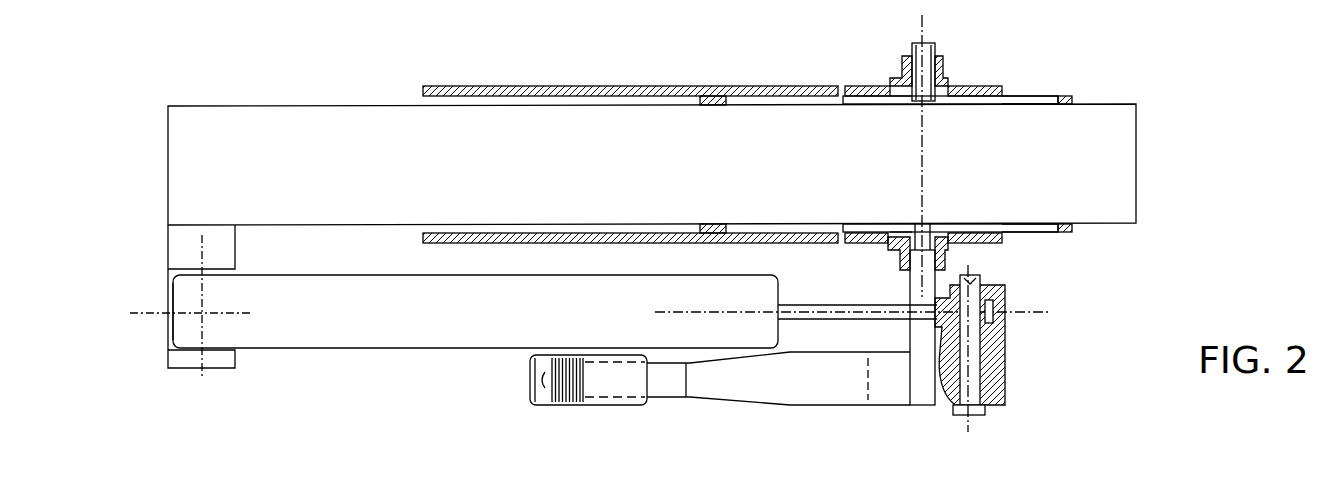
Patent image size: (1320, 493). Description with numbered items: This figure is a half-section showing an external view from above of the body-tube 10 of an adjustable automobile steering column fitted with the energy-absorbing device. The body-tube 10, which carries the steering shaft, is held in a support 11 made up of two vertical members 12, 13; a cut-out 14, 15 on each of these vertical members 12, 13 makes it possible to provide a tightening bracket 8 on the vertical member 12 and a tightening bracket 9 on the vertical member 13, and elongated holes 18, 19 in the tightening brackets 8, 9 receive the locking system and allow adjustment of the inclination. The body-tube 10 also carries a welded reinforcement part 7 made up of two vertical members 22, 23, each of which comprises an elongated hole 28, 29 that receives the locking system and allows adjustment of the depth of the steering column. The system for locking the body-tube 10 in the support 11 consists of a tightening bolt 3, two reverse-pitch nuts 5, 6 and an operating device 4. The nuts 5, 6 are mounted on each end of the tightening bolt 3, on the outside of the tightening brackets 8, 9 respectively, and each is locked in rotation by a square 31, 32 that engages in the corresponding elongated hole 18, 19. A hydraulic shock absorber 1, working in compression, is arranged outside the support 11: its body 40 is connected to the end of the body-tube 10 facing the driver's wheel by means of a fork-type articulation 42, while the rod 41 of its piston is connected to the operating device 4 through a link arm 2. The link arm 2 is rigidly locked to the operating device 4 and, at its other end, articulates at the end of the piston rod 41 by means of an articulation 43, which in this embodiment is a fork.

The hydraulic shock absorber 1 is at (410, 350).
The link arm 2 is at (1005, 312).
The tightening bolt 3 is at (912, 49).
The operating device 4 is at (732, 383).
The reverse-pitch nut 5 is at (945, 62).
The reverse-pitch nut 6 is at (942, 258).
The reinforcement part 7 is at (706, 95).
The tightening bracket 8 is at (869, 88).
The tightening bracket 9 is at (870, 245).
The body-tube 10 is at (579, 172).
The support 11 is at (630, 58).
The vertical member 12 is at (465, 92).
The vertical member 13 is at (467, 236).
The cut-out 14 is at (841, 95).
The cut-out 15 is at (840, 240).
The elongated hole 18 is at (960, 82).
The elongated hole 19 is at (938, 228).
The vertical member 22 is at (1070, 96).
The vertical member 23 is at (1064, 233).
The elongated hole 28 is at (1032, 97).
The elongated hole 29 is at (1028, 229).
The square 31 is at (898, 97).
The square 32 is at (898, 232).
The body 40 is at (303, 330).
The rod 41 is at (820, 315).
The fork-type articulation 42 is at (197, 306).
The articulation 43 is at (976, 372).